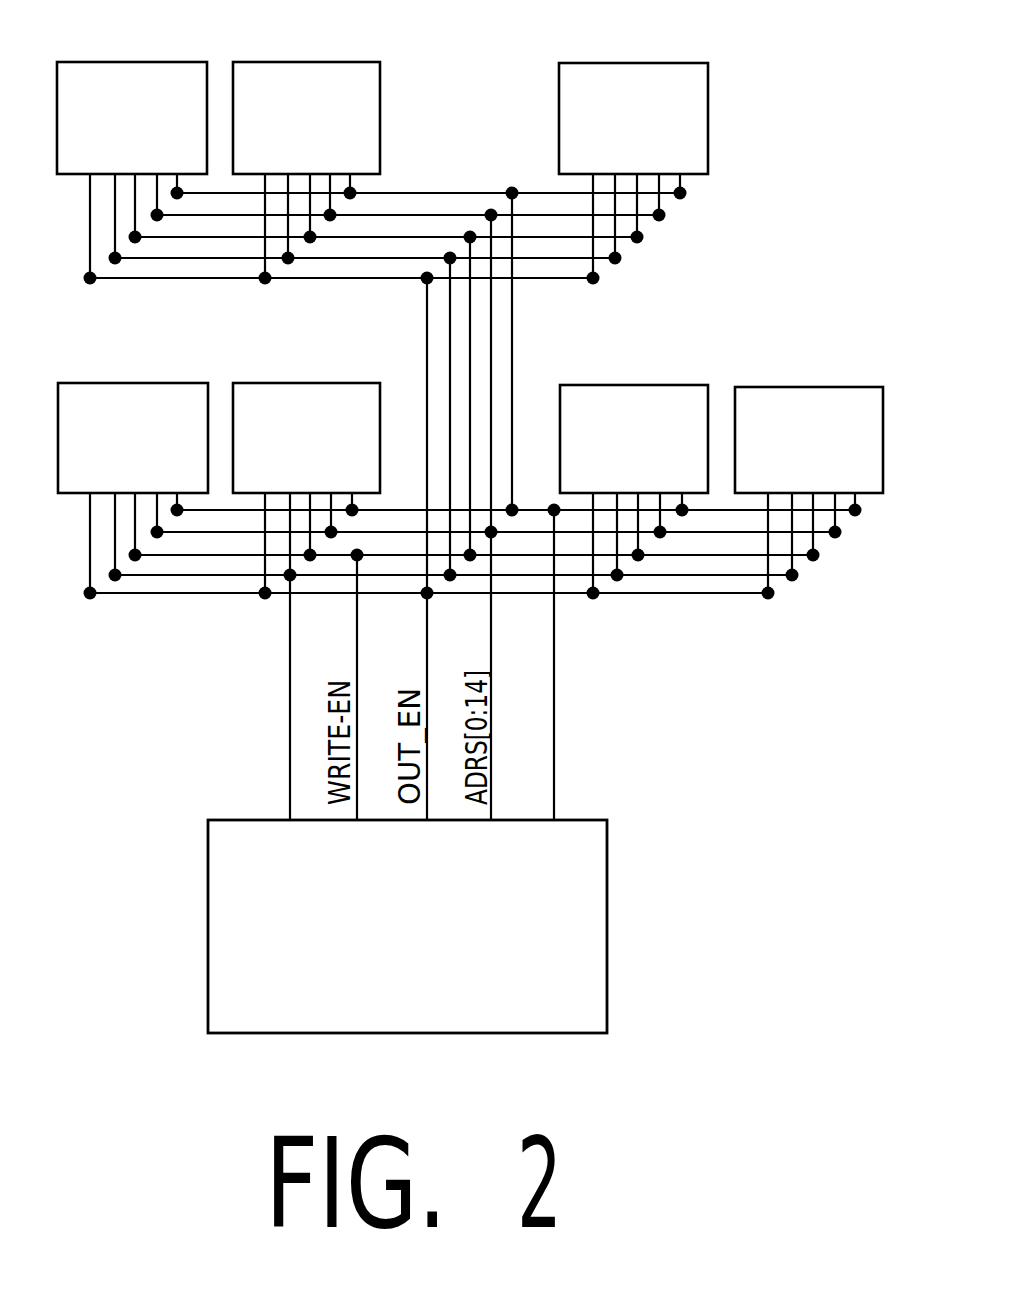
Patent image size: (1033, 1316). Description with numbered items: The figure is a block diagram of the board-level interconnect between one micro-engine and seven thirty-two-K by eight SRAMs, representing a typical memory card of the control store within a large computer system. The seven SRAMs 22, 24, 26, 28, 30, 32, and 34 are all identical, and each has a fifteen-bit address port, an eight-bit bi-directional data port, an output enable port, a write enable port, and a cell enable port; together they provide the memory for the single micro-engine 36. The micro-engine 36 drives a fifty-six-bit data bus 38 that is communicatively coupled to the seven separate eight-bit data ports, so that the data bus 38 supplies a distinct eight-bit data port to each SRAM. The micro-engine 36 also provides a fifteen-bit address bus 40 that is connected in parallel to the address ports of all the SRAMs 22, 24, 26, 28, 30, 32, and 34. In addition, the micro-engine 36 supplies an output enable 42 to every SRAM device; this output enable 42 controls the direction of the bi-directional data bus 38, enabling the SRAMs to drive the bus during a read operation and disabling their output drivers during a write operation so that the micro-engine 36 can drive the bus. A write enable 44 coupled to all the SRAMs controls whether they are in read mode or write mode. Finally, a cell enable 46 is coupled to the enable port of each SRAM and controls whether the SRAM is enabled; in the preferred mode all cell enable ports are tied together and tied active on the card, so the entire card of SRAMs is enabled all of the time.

The SRAM 22 is at (152, 62).
The SRAM 24 is at (354, 62).
The SRAM 26 is at (578, 65).
The SRAM 28 is at (187, 383).
The SRAM 30 is at (355, 383).
The SRAM 32 is at (583, 385).
The SRAM 34 is at (765, 387).
The micro-engine 36 is at (607, 907).
The data bus 38 is at (557, 658).
The address bus 40 is at (835, 532).
The output enable 42 is at (168, 598).
The write enable 44 is at (813, 555).
The cell enable 46 is at (290, 635).